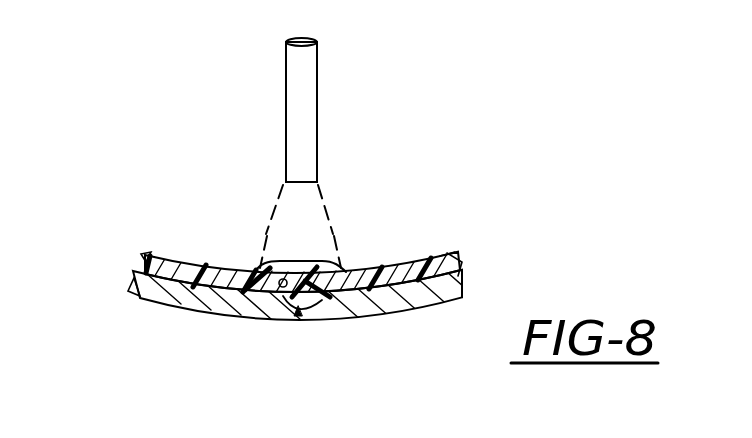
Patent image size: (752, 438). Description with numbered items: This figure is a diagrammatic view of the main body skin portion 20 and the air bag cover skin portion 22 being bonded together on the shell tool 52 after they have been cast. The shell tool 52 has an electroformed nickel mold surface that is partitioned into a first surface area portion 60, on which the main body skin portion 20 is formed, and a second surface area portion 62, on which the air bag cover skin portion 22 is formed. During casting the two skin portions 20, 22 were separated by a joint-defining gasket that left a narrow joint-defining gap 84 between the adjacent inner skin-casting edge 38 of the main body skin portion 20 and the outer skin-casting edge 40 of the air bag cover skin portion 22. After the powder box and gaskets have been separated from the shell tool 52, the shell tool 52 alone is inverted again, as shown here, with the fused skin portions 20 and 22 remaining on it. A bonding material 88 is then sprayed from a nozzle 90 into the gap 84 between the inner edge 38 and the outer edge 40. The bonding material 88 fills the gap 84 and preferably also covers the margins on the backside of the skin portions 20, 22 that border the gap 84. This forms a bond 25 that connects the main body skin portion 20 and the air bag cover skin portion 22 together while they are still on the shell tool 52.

The nozzle 90 is at (312, 88).
The bonding material 88 is at (278, 203).
The bond 25 is at (338, 256).
The air bag cover skin portion 22 is at (165, 258).
The second surface area portion 62 is at (215, 268).
The main body skin portion 20 is at (425, 258).
The first surface area portion 60 is at (445, 254).
The shell tool 52 is at (172, 310).
The outer skin-casting edge 40 is at (295, 303).
The joint-defining gap 84 is at (298, 302).
The inner skin-casting edge 38 is at (318, 292).